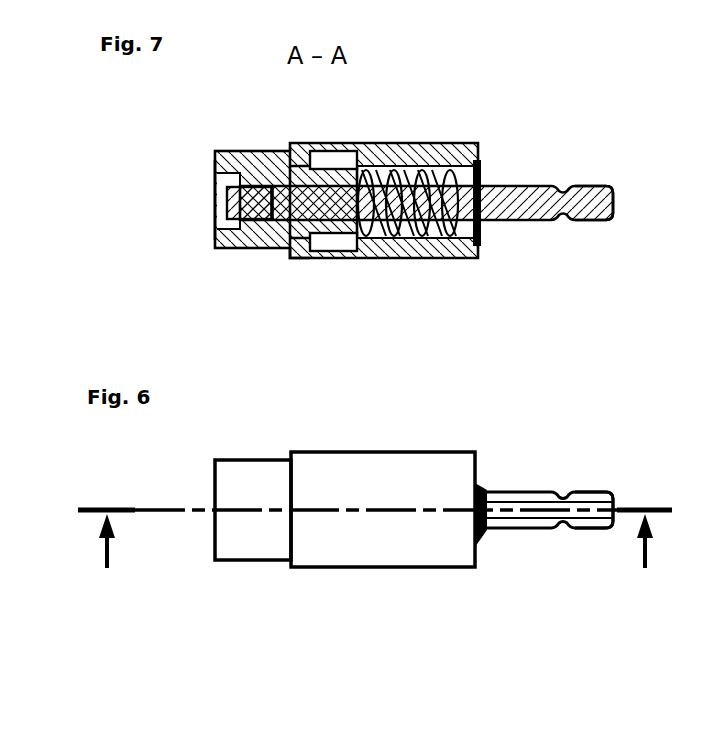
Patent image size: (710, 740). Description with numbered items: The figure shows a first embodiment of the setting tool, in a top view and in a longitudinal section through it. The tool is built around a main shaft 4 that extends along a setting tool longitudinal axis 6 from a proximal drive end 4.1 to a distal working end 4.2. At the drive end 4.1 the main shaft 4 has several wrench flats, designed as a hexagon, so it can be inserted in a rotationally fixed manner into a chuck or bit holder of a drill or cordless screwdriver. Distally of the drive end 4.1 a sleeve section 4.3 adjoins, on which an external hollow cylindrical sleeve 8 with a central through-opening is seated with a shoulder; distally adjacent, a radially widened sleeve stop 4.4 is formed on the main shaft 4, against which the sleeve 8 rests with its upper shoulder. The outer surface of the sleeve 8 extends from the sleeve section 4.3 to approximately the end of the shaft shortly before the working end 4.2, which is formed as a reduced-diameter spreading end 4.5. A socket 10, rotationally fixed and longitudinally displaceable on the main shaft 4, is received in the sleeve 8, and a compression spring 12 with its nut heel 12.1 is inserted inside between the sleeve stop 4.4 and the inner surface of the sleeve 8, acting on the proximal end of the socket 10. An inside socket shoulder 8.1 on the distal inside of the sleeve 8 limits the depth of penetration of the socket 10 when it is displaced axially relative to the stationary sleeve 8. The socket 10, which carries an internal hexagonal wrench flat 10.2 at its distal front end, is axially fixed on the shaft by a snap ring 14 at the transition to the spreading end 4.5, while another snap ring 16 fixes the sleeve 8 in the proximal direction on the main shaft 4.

In FIG. 7, the main shaft 4 is at (623, 150).
In FIG. 6, the main shaft 4 is at (580, 480).
In FIG. 7, the drive end 4.1 is at (615, 199).
In FIG. 6, the drive end 4.1 is at (606, 505).
In FIG. 7, the working end 4.2 is at (215, 202).
In FIG. 7, the sleeve section 4.3 is at (480, 242).
In FIG. 7, the sleeve stop 4.4 is at (433, 240).
In FIG. 7, the spreading end 4.5 is at (215, 158).
In FIG. 6, the setting tool longitudinal axis 6 is at (650, 506).
In FIG. 7, the sleeve 8 is at (420, 146).
In FIG. 6, the sleeve 8 is at (454, 455).
In FIG. 7, the inside socket shoulder 8.1 is at (291, 259).
In FIG. 6, the socket 10 is at (246, 462).
In FIG. 7, the wrench flat 10.2 is at (215, 223).
In FIG. 7, the compression spring 12 is at (362, 250).
In FIG. 7, the nut heel 12.1 is at (326, 149).
In FIG. 7, the snap ring 14 is at (243, 150).
In FIG. 7, the snap ring 16 is at (462, 172).